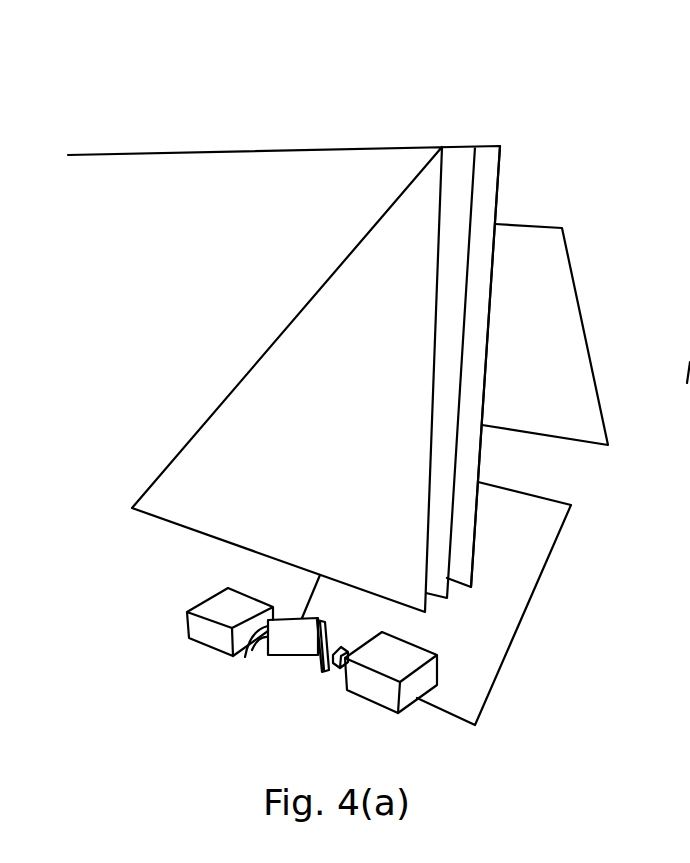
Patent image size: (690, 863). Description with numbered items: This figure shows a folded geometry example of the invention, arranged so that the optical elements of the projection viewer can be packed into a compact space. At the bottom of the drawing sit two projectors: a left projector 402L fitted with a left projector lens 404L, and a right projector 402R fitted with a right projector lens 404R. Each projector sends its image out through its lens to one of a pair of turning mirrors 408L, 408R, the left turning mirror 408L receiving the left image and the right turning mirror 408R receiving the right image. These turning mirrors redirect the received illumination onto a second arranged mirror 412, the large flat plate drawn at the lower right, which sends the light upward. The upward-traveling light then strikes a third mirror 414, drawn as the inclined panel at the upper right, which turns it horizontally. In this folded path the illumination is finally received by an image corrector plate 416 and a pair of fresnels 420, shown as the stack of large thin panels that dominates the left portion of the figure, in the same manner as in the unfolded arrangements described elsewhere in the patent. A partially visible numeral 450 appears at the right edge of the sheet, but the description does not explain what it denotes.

The fresnels 420 is at (233, 153).
The image corrector plate 416 is at (500, 188).
The third mirror 414 is at (575, 276).
The second arranged mirror 412 is at (552, 557).
The element (partially visible) 450 is at (678, 388).
The left projector 402L is at (207, 645).
The right projector 402R is at (370, 695).
The left projector lens 404L is at (243, 653).
The right projector lens 404R is at (337, 665).
The turning mirror 408L is at (290, 660).
The turning mirror 408R is at (317, 675).